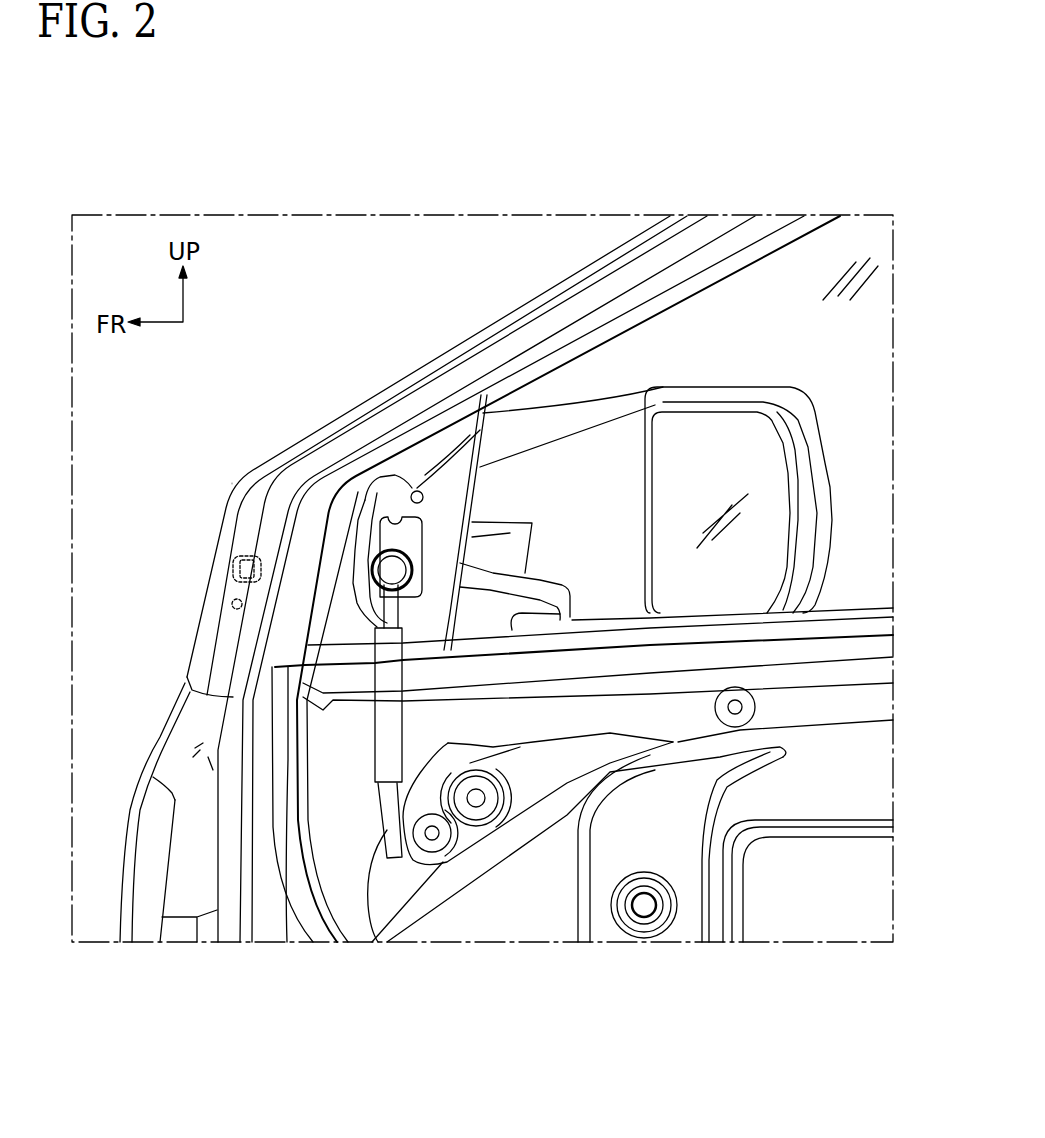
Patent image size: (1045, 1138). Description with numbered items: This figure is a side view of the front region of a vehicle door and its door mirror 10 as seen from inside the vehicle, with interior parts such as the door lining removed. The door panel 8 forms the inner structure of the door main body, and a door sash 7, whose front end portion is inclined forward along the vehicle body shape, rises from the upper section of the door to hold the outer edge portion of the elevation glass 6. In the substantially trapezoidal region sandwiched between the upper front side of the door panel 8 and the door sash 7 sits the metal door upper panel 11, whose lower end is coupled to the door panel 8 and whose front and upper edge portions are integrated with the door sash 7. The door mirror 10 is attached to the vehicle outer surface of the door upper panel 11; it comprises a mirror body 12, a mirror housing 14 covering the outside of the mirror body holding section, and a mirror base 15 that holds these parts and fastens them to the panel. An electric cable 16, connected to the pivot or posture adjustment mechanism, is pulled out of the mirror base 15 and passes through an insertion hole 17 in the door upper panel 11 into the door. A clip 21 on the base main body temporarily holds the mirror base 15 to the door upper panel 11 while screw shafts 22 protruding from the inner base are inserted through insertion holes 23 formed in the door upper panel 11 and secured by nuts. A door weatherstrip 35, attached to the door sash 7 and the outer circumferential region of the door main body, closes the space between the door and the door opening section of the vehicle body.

The elevation glass 6 is at (858, 288).
The door sash 7 is at (585, 305).
The door panel 8 is at (528, 958).
The door mirror 10 is at (793, 459).
The door upper panel 11 is at (346, 481).
The mirror body 12 is at (753, 500).
The mirror housing 14 is at (805, 405).
The mirror base 15 is at (499, 555).
The electric cable 16 is at (388, 862).
The insertion hole 17 is at (392, 512).
The clip 21 is at (242, 538).
The screw shaft 22 is at (428, 590).
The insertion hole 23 is at (418, 490).
The door weatherstrip 35 is at (266, 471).